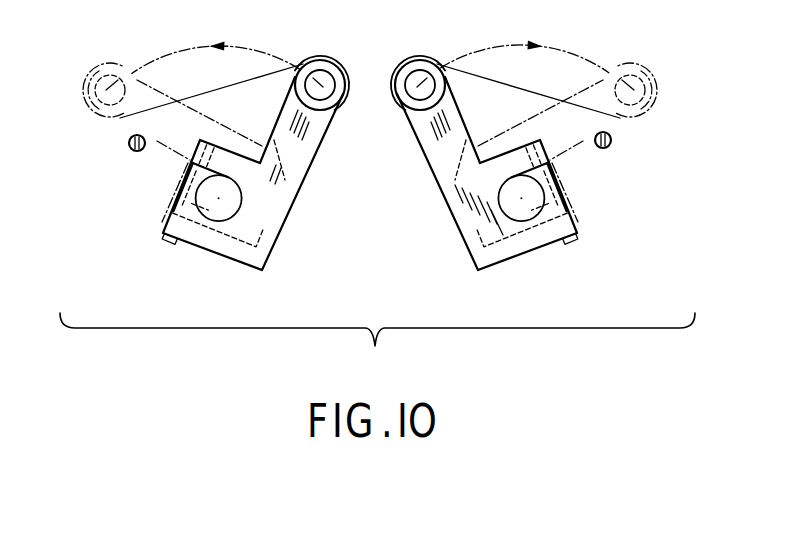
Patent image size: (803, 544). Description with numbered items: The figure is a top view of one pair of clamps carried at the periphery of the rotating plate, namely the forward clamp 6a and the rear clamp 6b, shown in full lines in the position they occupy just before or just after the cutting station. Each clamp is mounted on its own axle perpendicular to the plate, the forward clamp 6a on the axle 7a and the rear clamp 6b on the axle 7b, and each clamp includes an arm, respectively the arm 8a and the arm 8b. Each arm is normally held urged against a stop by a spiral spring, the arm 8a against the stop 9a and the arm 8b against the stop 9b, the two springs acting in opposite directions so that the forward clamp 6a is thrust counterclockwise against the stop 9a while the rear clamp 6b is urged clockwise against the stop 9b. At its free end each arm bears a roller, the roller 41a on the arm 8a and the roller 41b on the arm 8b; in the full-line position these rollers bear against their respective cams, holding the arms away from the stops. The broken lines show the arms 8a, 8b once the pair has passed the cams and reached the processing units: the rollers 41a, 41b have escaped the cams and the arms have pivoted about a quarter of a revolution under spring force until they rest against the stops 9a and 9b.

The roller 41b is at (327, 60).
The roller 41a is at (414, 62).
The arm 8b is at (314, 136).
The arm 8a is at (432, 146).
The rear clamp 6b is at (312, 173).
The forward clamp 6a is at (436, 190).
The axle 7b is at (218, 206).
The axle 7a is at (527, 201).
The stop 9b is at (133, 150).
The stop 9a is at (612, 140).